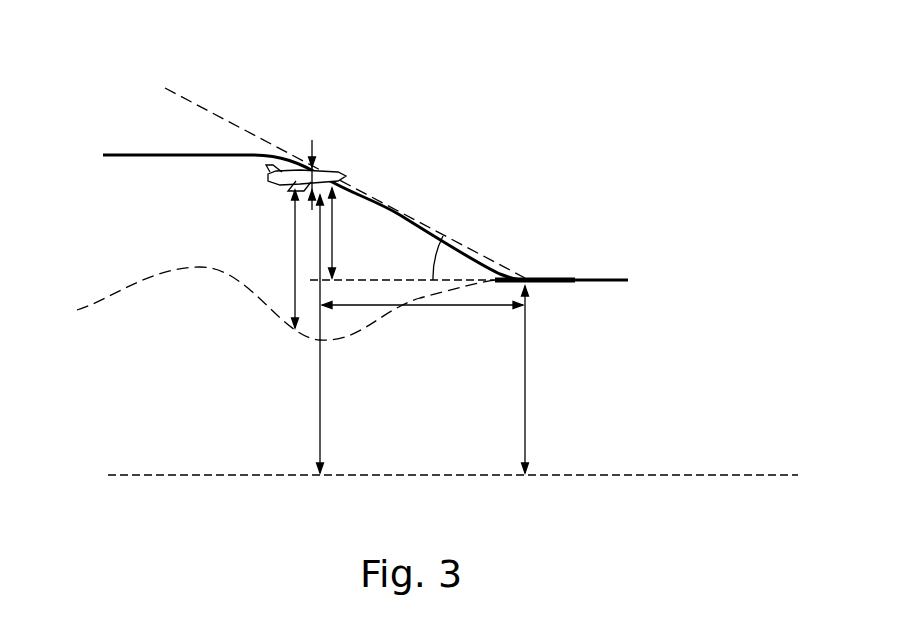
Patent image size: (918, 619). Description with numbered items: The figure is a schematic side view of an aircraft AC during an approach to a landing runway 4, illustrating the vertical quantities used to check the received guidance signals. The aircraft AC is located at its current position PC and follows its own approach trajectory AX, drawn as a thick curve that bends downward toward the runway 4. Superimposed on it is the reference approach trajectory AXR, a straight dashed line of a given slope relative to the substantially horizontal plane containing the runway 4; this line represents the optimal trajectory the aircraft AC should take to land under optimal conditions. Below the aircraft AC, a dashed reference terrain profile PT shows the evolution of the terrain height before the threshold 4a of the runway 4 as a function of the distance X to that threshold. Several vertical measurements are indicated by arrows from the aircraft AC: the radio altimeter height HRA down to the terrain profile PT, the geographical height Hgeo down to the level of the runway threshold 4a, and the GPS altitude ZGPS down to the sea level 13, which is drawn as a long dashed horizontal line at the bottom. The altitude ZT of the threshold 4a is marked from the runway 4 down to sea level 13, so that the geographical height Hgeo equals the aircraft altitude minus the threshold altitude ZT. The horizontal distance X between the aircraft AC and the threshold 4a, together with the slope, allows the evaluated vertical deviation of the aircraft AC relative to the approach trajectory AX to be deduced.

The sea level 13 is at (748, 477).
The runway 4 is at (605, 278).
The runway threshold 4a is at (527, 278).
The approach trajectory AX is at (127, 155).
The reference approach trajectory AXR is at (203, 108).
The aircraft AC is at (333, 168).
The position of the aircraft PC is at (293, 188).
The reference terrain profile PT is at (120, 300).
The radio altimeter height HRA is at (293, 248).
The geographical height Hgeo is at (332, 233).
The GPS altitude of the aircraft ZGPS is at (320, 382).
The distance to the runway threshold X is at (437, 310).
The altitude of the runway threshold ZT is at (527, 367).